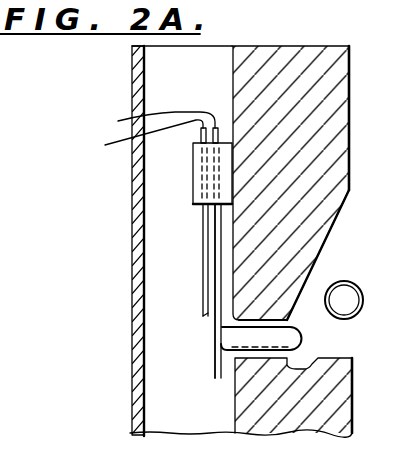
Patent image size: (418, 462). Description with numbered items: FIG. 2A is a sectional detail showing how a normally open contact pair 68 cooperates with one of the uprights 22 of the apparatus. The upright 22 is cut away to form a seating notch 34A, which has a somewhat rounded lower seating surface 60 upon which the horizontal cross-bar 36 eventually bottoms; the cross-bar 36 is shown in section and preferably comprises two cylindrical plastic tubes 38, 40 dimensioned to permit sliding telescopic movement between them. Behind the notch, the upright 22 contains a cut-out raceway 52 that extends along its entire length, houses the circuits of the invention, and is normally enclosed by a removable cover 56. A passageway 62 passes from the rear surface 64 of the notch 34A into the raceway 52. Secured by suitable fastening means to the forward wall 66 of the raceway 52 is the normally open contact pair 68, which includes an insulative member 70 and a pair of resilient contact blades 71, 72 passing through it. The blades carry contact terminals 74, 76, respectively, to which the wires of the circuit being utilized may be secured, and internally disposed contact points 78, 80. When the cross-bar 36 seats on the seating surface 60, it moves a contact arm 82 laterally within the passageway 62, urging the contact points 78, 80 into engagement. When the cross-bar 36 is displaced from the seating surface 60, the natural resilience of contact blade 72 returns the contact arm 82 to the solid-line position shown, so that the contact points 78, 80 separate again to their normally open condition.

The upright 22 is at (355, 85).
The seating notch 34A is at (338, 250).
The cross-bar 36 is at (368, 262).
The cylindrical plastic tube 38 is at (362, 291).
The cylindrical plastic tube 40 is at (364, 302).
The cut-out raceway 52 is at (192, 81).
The removable cover 56 is at (132, 74).
The seating surface 60 is at (306, 368).
The passageway 62 is at (251, 360).
The rear surface 64 is at (289, 360).
The forward wall 66 is at (232, 90).
The normally open contact pair 68 is at (186, 181).
The insulative member 70 is at (191, 196).
The contact blade 71 is at (202, 231).
The contact blade 72 is at (211, 258).
The contact terminal 74 is at (142, 139).
The contact terminal 76 is at (148, 125).
The contact point 78 is at (212, 300).
The contact point 80 is at (207, 315).
The contact arm 82 is at (322, 317).